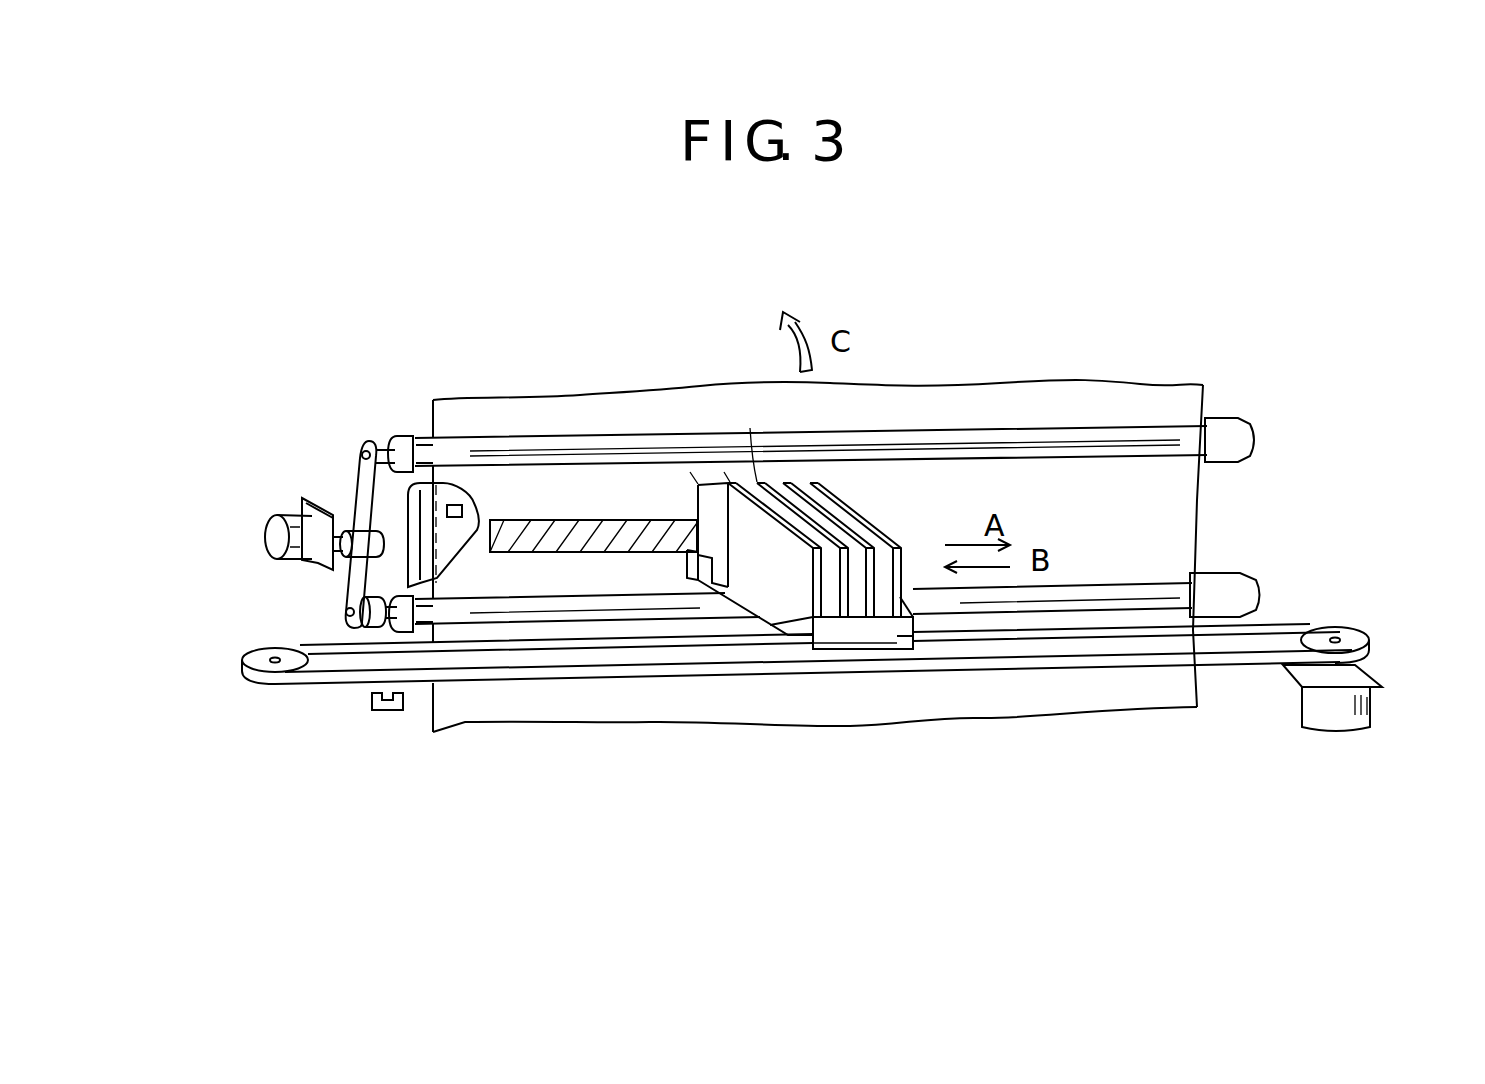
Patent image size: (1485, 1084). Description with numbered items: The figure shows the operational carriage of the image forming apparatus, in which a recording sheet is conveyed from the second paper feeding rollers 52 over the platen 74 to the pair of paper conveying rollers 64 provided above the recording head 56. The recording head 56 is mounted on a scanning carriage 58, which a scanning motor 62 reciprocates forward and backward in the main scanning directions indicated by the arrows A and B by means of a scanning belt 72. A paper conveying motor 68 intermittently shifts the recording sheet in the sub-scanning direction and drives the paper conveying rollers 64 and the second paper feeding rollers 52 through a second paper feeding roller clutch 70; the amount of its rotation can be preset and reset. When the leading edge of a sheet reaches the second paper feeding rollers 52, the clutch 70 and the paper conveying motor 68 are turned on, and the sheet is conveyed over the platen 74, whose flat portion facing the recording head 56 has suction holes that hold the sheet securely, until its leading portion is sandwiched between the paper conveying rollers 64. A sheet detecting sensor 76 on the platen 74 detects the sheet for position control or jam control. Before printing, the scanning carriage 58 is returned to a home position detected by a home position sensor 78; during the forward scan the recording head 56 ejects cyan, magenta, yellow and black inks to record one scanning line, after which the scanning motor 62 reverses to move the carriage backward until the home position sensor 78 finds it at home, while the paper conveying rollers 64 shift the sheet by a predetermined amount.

The second paper feeding rollers 52 is at (1255, 597).
The recording head 56 is at (830, 512).
The scanning carriage 58 is at (863, 640).
The scanning motor 62 is at (1382, 702).
The paper conveying rollers 64 is at (1250, 445).
The paper conveying motor 68 is at (265, 536).
The second paper feeding roller clutch 70 is at (343, 613).
The scanning belt 72 is at (1110, 670).
The platen 74 is at (413, 503).
The sheet detecting sensor 76 is at (470, 503).
The home position sensor 78 is at (386, 712).